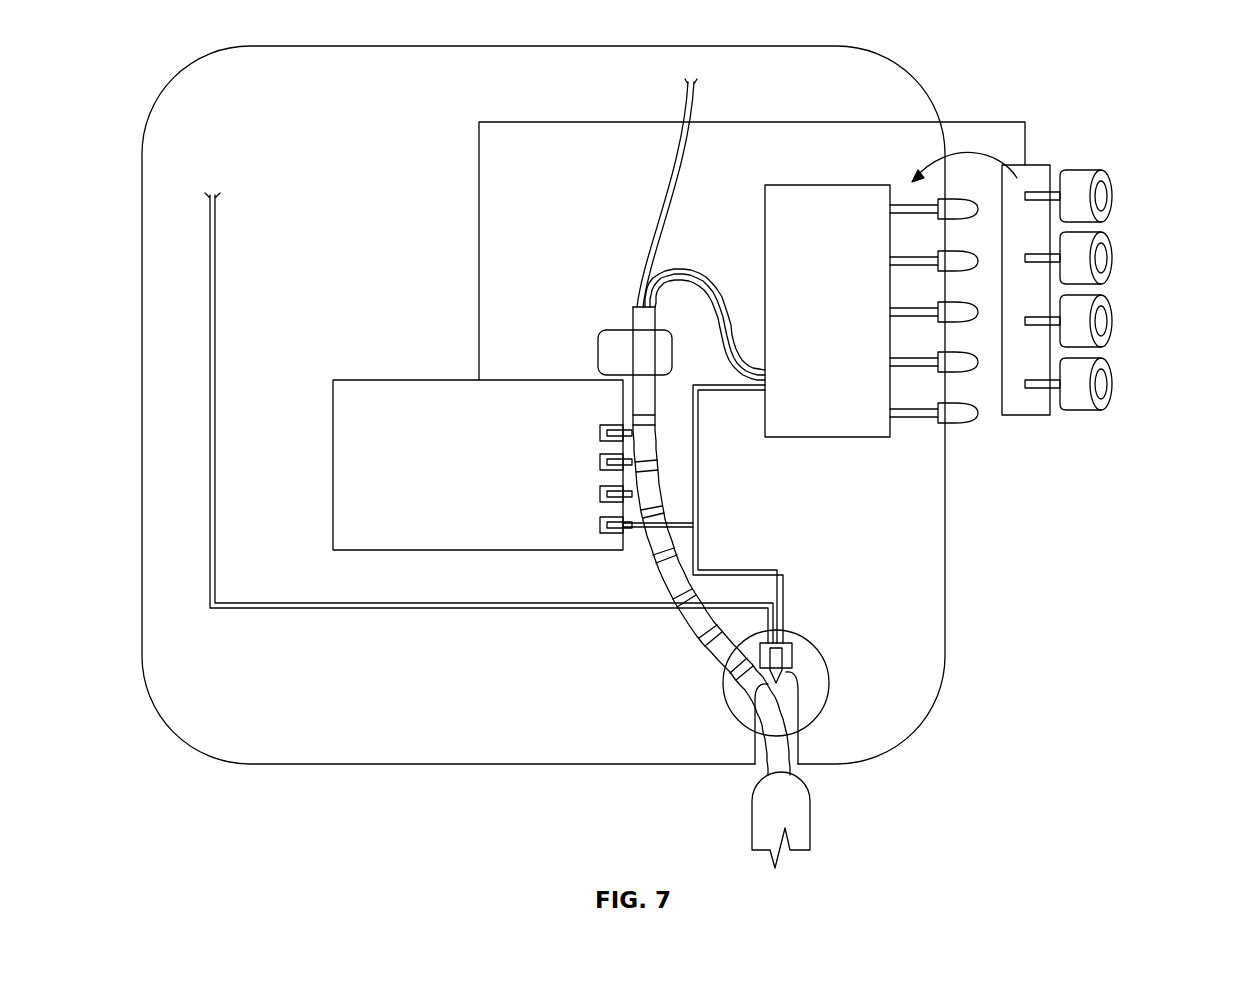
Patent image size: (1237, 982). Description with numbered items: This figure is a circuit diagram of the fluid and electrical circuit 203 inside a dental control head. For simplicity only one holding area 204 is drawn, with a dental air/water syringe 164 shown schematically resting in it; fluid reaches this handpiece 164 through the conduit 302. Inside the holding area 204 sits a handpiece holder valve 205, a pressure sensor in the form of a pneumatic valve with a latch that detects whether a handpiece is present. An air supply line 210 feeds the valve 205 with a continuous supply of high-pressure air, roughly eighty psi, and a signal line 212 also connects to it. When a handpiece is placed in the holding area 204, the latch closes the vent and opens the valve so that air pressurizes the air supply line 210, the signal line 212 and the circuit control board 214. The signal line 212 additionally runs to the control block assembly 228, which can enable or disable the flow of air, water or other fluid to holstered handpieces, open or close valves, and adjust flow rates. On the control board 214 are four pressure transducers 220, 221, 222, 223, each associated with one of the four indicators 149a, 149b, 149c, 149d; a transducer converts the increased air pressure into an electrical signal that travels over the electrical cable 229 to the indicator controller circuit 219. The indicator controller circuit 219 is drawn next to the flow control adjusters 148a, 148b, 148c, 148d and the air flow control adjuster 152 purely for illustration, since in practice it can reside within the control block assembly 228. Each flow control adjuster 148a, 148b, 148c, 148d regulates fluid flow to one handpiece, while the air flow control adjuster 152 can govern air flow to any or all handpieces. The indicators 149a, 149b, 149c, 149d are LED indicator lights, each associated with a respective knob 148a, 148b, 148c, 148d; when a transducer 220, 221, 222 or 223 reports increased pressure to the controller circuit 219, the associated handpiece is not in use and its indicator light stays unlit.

The fluid and electrical circuit 203 is at (487, 45).
The electrical cable 229 is at (801, 121).
The control block assembly 228 is at (829, 184).
The flow control adjuster 148a is at (943, 372).
The flow control adjuster 148b is at (943, 322).
The flow control adjuster 148c is at (943, 271).
The flow control adjuster 148d is at (943, 220).
The air flow control adjuster 152 is at (943, 422).
The indicator controller circuit 219 is at (1025, 417).
The indicator 149a is at (1102, 385).
The indicator 149b is at (1102, 322).
The indicator 149c is at (1102, 259).
The indicator 149d is at (1102, 197).
The circuit control board 214 is at (398, 379).
The pressure transducer 220 is at (601, 525).
The pressure transducer 221 is at (601, 493).
The pressure transducer 222 is at (601, 461).
The pressure transducer 223 is at (601, 432).
The signal line 212 is at (750, 568).
The air supply line 210 is at (436, 609).
The handpiece holder valve 205 is at (792, 655).
The holding area 204 is at (788, 707).
The conduit 302 is at (762, 703).
The dental air/water syringe 164 is at (798, 830).